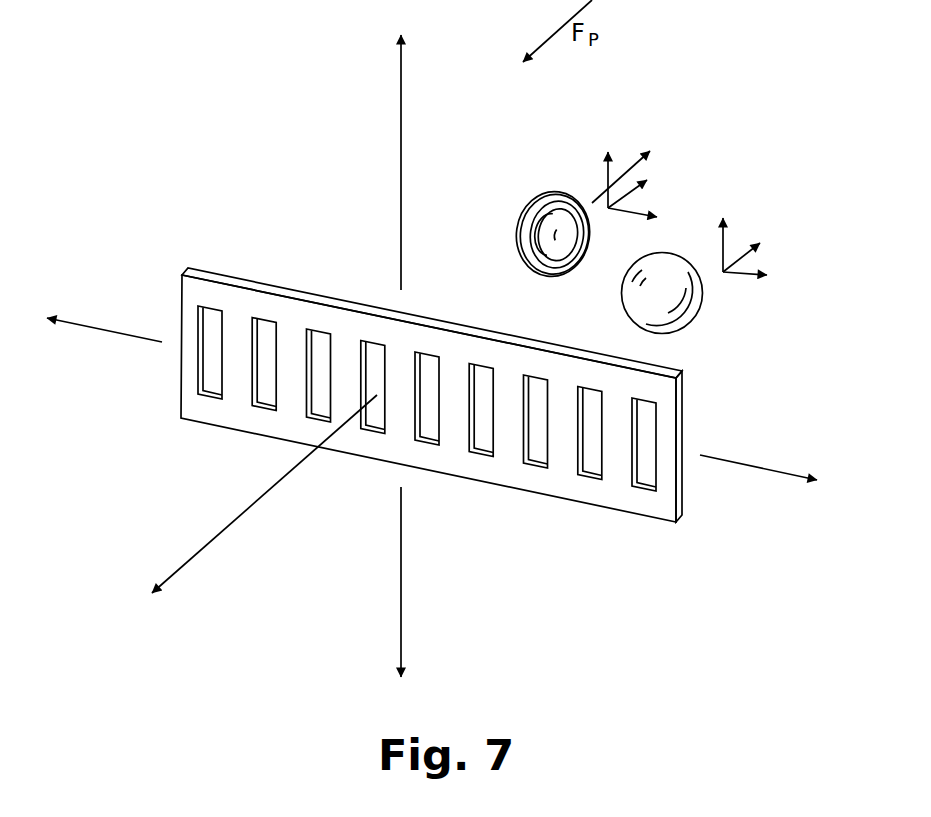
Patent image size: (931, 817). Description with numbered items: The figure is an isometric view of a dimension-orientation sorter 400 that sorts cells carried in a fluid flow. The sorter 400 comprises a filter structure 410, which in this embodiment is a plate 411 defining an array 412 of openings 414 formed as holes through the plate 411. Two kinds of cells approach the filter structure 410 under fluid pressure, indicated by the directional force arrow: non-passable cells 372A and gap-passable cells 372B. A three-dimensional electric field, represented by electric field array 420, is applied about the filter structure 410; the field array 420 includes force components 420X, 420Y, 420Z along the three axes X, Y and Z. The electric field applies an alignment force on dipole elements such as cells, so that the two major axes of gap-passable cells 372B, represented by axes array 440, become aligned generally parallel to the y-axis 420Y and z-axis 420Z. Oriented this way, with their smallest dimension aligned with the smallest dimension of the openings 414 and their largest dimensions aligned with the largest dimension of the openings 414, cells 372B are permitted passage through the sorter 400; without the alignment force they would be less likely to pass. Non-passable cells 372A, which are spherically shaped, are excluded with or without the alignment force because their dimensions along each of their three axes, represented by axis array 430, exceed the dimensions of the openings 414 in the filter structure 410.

The dimension-orientation sorter 400 is at (332, 233).
The filter structure 410 is at (642, 516).
The plate 411 is at (240, 413).
The array of openings 412 is at (585, 489).
The openings 414 is at (535, 468).
The electric field array 420 is at (410, 627).
The force component along x-axis 420X is at (750, 467).
The force component along y-axis 420Y is at (203, 547).
The force component along z-axis 420Z is at (401, 566).
The axis array 430 is at (728, 268).
The axes array 440 is at (627, 207).
The non-passable cells 372A is at (677, 327).
The gap-passable cells 372B is at (527, 212).